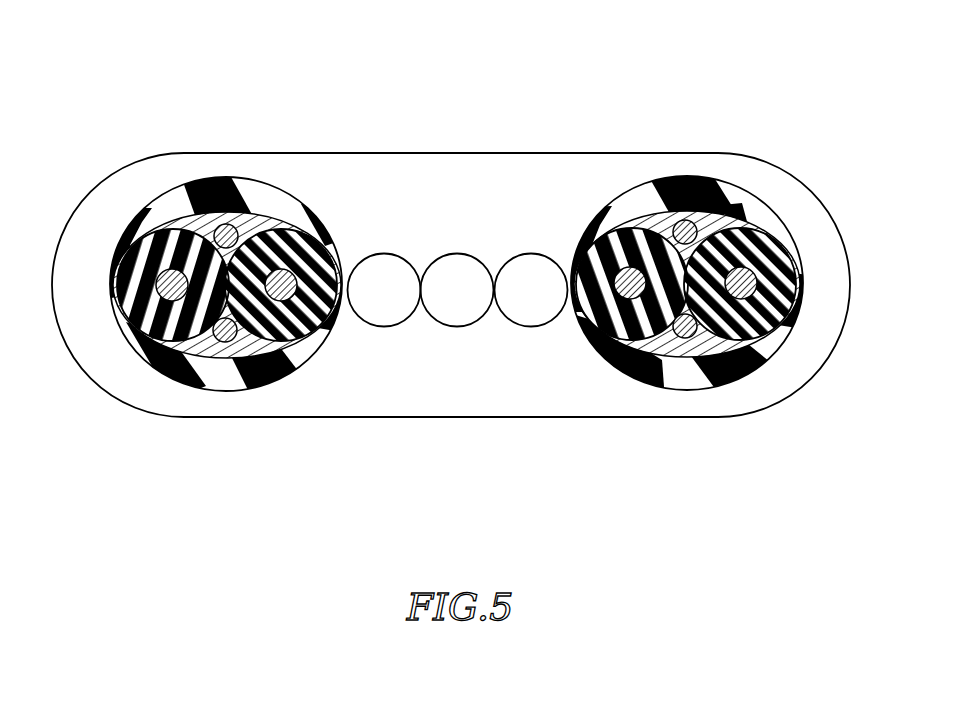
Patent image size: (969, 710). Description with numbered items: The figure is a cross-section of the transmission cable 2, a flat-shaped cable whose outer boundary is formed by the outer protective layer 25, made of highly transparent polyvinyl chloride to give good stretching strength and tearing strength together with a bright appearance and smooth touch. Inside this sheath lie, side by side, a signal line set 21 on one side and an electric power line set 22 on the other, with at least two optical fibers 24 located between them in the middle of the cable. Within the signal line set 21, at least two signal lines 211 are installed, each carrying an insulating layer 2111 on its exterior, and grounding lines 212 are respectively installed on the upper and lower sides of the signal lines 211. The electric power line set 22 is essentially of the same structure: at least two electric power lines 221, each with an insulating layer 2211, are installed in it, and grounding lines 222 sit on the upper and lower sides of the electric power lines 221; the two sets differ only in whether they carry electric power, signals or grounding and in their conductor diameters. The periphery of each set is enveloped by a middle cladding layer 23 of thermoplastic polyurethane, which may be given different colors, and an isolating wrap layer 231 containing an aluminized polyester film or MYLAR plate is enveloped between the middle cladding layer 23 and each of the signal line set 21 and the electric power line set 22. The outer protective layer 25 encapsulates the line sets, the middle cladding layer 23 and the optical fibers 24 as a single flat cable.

The transmission cable 2 is at (456, 75).
The signal line set 21 is at (138, 88).
The signal line 211 is at (158, 262).
The insulating layer 2111 is at (138, 262).
The grounding line 212 is at (225, 226).
The electric power line set 22 is at (668, 85).
The electric power line 221 is at (618, 257).
The insulating layer 2211 is at (598, 220).
The grounding line 222 is at (682, 222).
The middle cladding layer 23 is at (300, 210).
The isolating wrap layer 231 is at (258, 212).
The optical fiber 24 is at (457, 262).
The outer protective layer 25 is at (378, 170).